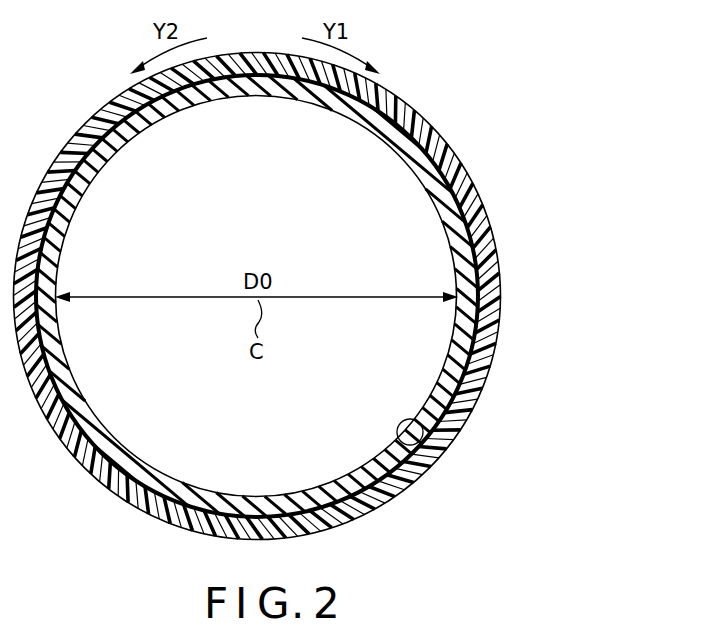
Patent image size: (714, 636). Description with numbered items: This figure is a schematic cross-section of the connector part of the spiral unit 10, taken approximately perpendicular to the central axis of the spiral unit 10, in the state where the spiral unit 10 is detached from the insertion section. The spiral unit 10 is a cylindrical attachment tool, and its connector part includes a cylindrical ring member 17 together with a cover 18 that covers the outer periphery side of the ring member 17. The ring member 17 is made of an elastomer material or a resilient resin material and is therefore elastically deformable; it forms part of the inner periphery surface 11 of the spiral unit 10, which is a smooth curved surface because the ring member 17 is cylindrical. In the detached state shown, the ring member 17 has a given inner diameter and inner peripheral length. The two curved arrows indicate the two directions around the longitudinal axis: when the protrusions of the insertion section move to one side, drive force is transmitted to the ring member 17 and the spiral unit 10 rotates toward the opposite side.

The spiral unit 10 is at (521, 128).
The cover 18 is at (416, 115).
The ring member 17 is at (432, 161).
The inner periphery surface 11 is at (400, 442).